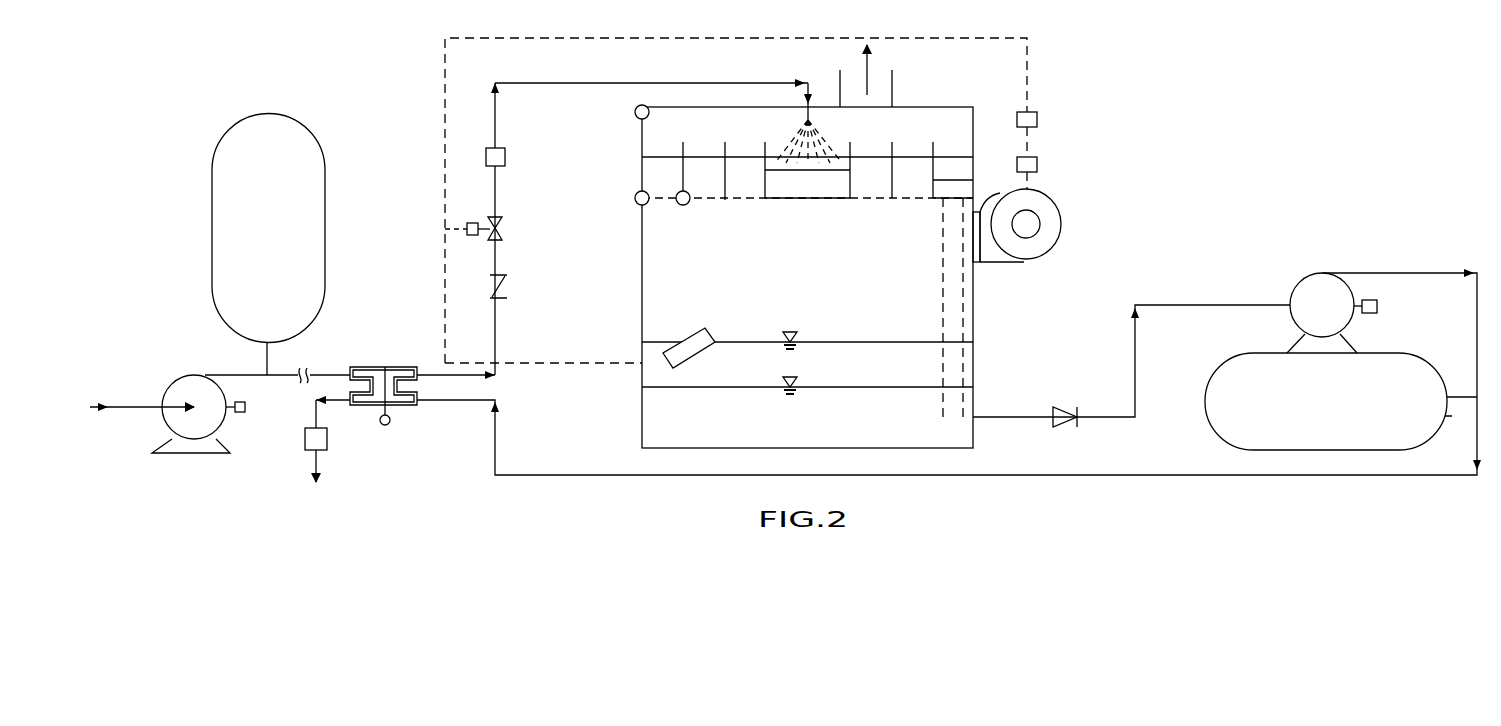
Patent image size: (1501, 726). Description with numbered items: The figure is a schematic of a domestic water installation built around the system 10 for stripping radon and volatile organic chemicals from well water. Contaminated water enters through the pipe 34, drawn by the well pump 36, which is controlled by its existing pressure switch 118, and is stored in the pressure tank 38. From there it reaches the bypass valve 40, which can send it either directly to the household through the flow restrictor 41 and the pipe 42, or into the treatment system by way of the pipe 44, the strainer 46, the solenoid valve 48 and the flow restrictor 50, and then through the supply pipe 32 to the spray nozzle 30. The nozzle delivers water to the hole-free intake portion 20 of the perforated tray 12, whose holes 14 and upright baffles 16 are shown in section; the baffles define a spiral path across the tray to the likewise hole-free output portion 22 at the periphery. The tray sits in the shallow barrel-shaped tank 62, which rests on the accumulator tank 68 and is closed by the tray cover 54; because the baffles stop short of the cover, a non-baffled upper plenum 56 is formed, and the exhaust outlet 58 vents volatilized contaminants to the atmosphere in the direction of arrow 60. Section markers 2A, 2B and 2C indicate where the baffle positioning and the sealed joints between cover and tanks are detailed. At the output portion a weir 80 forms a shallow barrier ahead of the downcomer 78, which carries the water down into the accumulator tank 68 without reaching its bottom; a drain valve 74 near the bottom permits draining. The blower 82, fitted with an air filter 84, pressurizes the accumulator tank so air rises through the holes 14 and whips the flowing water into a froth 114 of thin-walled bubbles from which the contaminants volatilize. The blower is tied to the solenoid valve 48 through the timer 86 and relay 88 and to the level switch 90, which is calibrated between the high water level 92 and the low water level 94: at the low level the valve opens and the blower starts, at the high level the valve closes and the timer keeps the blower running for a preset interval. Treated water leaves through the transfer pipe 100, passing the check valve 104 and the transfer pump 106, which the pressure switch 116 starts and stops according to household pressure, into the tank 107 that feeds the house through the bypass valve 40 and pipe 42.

The system 10 is at (1122, 210).
The tray 12 is at (725, 200).
The holes 14 is at (896, 202).
The baffles 16 is at (723, 150).
The intake portion 20 is at (825, 194).
The output portion 22 is at (955, 156).
The section indicator 2A is at (683, 205).
The section indicator 2B is at (637, 203).
The section indicator 2C is at (637, 108).
The spray nozzle 30 is at (803, 118).
The supply pipe 32 is at (598, 83).
The pipe 34 is at (133, 402).
The well pump 36 is at (222, 424).
The pressure tank 38 is at (277, 208).
The bypass valve 40 is at (388, 367).
The flow restrictor 41 is at (328, 438).
The pipe 42 is at (320, 462).
The pipe 44 is at (496, 322).
The strainer 46 is at (505, 288).
The solenoid valve 48 is at (498, 216).
The flow restrictor 50 is at (506, 158).
The tray cover 54 is at (960, 106).
The upper plenum 56 is at (870, 134).
The exhaust outlet 58 is at (893, 75).
The arrow 60 is at (870, 70).
The tank 62 is at (645, 157).
The accumulator tank 68 is at (642, 270).
The drain valve 74 is at (634, 446).
The downcomer 78 is at (943, 270).
The weir 80 is at (957, 180).
The blower 82 is at (1035, 262).
The air filter 84 is at (1040, 212).
The timer 86 is at (1038, 164).
The relay 88 is at (1038, 115).
The level switch 90 is at (700, 328).
The high water level 92 is at (796, 333).
The low water level 94 is at (796, 393).
The transfer pipe 100 is at (1003, 417).
The check valve 104 is at (1060, 405).
The transfer pump 106 is at (1306, 277).
The receiver tank 107 is at (1318, 413).
The froth of bubbles 114 is at (869, 170).
The pressure switch 116 is at (1378, 302).
The pressure switch 118 is at (246, 404).